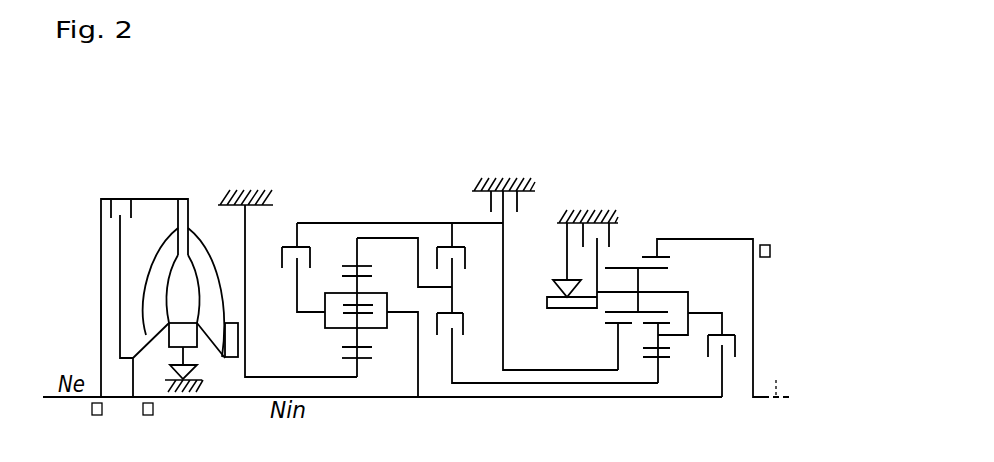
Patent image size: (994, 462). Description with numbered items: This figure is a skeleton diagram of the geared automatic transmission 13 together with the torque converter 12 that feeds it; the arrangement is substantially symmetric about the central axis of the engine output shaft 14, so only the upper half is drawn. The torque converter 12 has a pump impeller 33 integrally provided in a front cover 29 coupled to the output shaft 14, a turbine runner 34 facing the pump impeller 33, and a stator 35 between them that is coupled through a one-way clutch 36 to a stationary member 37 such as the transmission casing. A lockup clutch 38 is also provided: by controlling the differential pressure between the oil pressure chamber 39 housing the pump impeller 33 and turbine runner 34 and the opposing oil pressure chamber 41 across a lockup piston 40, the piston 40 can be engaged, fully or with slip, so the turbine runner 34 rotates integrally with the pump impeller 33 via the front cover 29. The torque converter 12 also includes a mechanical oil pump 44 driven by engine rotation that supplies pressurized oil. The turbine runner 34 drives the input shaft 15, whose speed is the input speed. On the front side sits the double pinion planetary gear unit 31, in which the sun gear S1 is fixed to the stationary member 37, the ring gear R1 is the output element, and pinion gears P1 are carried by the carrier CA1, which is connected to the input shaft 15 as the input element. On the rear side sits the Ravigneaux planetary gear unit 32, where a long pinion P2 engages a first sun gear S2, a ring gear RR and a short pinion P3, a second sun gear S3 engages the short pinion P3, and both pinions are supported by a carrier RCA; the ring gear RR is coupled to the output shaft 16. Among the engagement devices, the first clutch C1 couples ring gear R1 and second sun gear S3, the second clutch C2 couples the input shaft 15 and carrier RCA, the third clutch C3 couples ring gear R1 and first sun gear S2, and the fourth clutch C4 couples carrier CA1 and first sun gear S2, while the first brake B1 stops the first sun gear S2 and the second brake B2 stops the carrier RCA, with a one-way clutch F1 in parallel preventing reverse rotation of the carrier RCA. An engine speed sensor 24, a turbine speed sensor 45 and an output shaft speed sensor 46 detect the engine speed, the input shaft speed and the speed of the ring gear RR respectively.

The torque converter 12 is at (214, 170).
The geared automatic transmission 13 is at (390, 146).
The output shaft 14 is at (95, 399).
The input shaft 15 is at (240, 399).
The output shaft 16 is at (760, 398).
The engine speed sensor 24 is at (102, 409).
The front cover 29 is at (148, 199).
The double pinion planetary gear unit 31 is at (329, 196).
The Ravigneaux planetary gear unit 32 is at (685, 202).
The pump impeller 33 is at (204, 231).
The turbine runner 34 is at (170, 239).
The stator 35 is at (191, 346).
The one-way clutch 36 is at (170, 357).
The stationary member 37 is at (193, 393).
The lockup clutch 38 is at (111, 213).
The oil pressure chamber 39 is at (138, 255).
The lockup piston 40 is at (118, 287).
The oil pressure chamber 41 is at (112, 318).
The mechanical oil pump 44 is at (238, 323).
The turbine speed sensor 45 is at (153, 409).
The output shaft speed sensor 46 is at (771, 246).
The fourth clutch C4 is at (278, 261).
The ring gear R1 is at (370, 268).
The pinion gears P1 is at (372, 276).
The carrier CA1 is at (310, 313).
The sun gear S1 is at (375, 358).
The third clutch C3 is at (465, 260).
The first clutch C1 is at (465, 325).
The first brake B1 is at (520, 204).
The second brake B2 is at (582, 235).
The one-way clutch F1 is at (562, 277).
The long pinion P2 is at (648, 268).
The ring gear RR is at (667, 238).
The carrier RCA is at (710, 310).
The first sun gear S2 is at (610, 323).
The short pinion P3 is at (650, 340).
The second sun gear S3 is at (670, 357).
The second clutch C2 is at (737, 345).